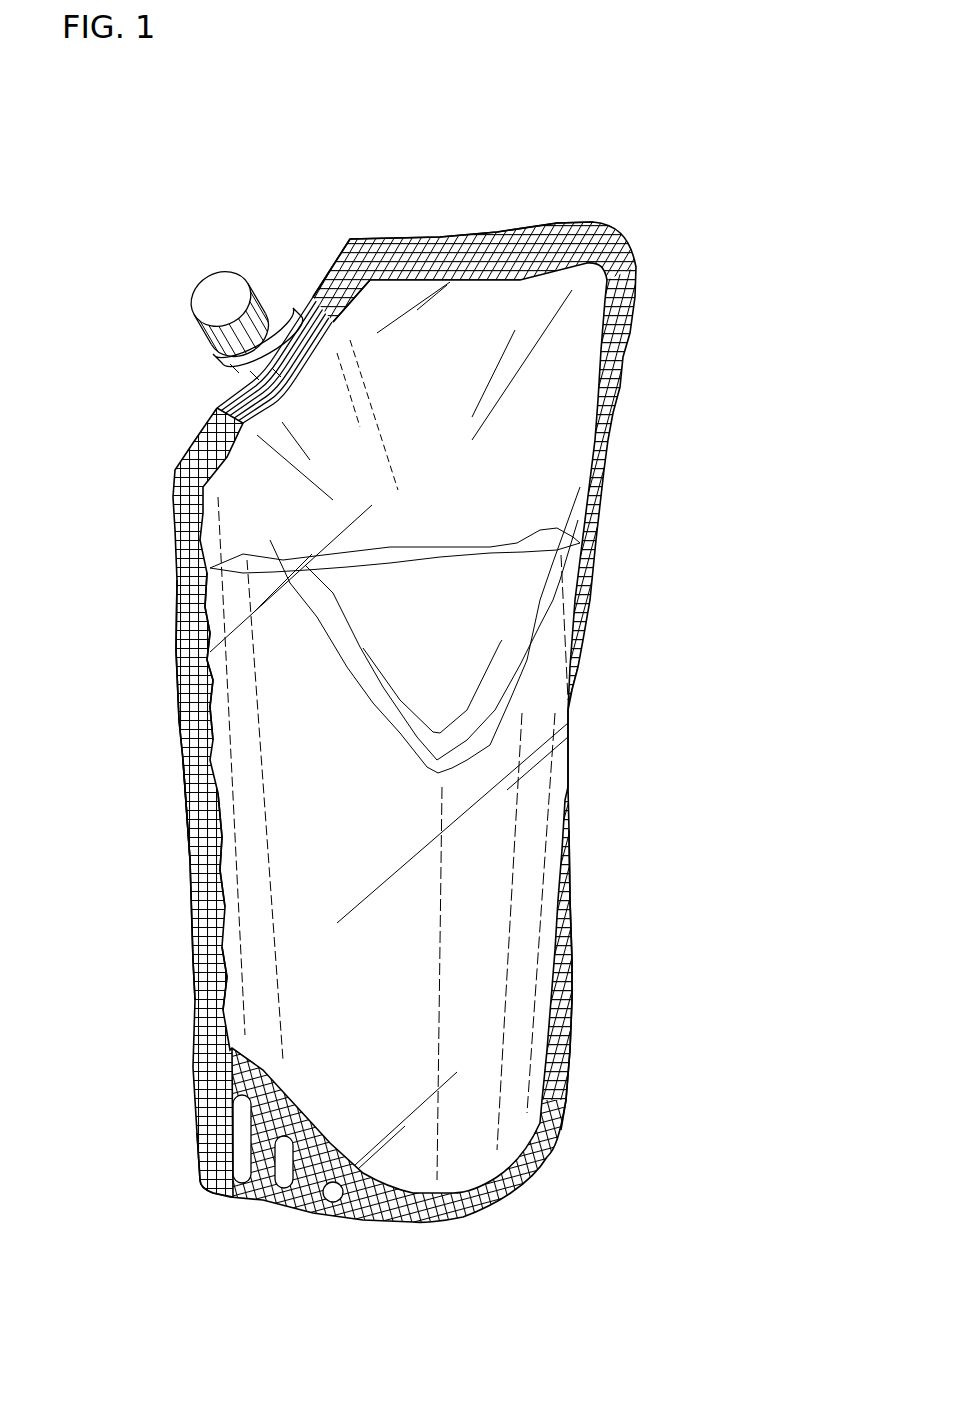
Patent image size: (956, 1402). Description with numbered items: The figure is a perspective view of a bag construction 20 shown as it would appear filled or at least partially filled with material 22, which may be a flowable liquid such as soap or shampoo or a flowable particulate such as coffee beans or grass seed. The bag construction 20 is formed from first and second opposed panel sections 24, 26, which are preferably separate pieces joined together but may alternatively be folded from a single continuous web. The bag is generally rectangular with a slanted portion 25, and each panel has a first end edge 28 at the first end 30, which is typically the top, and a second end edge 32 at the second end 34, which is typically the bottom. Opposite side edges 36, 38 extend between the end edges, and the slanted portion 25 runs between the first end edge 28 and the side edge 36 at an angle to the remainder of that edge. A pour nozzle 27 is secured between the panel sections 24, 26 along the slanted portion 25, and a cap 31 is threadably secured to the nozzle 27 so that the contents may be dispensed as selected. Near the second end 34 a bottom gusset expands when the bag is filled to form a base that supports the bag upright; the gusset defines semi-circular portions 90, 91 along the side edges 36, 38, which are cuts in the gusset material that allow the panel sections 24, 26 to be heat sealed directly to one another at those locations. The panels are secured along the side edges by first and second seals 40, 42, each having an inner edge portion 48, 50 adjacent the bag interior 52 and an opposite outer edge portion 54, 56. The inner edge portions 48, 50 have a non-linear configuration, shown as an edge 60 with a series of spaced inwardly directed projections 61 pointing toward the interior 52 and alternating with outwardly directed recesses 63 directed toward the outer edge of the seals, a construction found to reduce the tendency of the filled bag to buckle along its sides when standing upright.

The bag construction 20 is at (657, 92).
The first end 30 is at (550, 197).
The first end edge 28 is at (490, 230).
The slanted portion 25 is at (318, 275).
The cap 31 is at (197, 288).
The pour nozzle 27 is at (230, 383).
The bag construction interior 52 is at (580, 325).
The second seal 42 is at (605, 408).
The inner edge portion of second seal 50 is at (558, 442).
The side edge 38 is at (592, 522).
The second panel section 26 is at (232, 528).
The side edge 36 is at (180, 595).
The first panel section 24 is at (238, 738).
The edge 60 is at (210, 675).
The outwardly directed recesses 63 is at (210, 698).
The first seal 40 is at (195, 745).
The material 22 is at (537, 707).
The outer edge portion of first seal 54 is at (185, 805).
The inner edge portion of first seal 48 is at (238, 847).
The inwardly directed projections 61 is at (222, 960).
The outer edge portion of second seal 56 is at (568, 967).
The semi-circular portion 91 is at (566, 1065).
The semi-circular portion 90 is at (207, 1167).
The second end edge 32 is at (372, 1220).
The second end 34 is at (303, 1253).